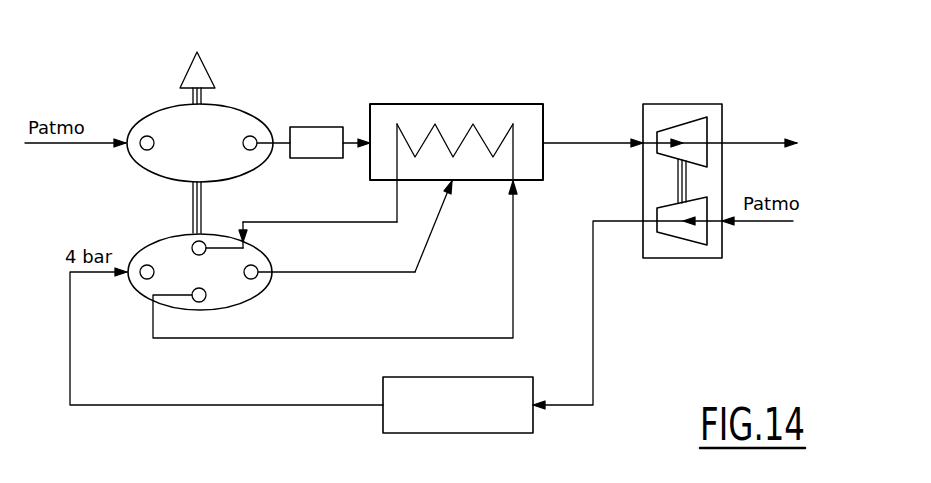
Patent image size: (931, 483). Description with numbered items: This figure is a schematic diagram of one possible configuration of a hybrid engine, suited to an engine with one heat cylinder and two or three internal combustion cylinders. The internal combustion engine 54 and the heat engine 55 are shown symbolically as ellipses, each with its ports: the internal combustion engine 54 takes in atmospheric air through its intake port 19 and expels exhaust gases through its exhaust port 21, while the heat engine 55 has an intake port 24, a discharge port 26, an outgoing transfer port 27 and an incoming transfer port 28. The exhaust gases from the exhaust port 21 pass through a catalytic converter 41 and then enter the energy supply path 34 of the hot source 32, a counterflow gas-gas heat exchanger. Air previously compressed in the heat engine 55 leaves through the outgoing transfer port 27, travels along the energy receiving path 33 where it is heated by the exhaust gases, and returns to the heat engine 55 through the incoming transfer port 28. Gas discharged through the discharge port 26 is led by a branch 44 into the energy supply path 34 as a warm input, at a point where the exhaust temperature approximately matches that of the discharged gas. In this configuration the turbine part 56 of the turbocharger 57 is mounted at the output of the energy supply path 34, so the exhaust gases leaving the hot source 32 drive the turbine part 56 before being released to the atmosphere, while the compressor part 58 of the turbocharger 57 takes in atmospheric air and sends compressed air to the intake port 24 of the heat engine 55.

The intake port 19 is at (147, 136).
The exhaust port 21 is at (250, 136).
The internal combustion engine 54 is at (128, 162).
The intake port 24 is at (147, 265).
The discharge port 26 is at (262, 260).
The outgoing transfer port 27 is at (205, 300).
The incoming transfer port 28 is at (195, 242).
The heat engine 55 is at (137, 290).
The catalytic converter 41 is at (320, 126).
The hot source 32 is at (450, 104).
The energy receiving path 33 is at (487, 137).
The energy supply path 34 is at (528, 123).
The turbocharger 57 is at (672, 104).
The turbine part 56 is at (712, 130).
The compressor part 58 is at (683, 238).
The branch 44 is at (513, 433).